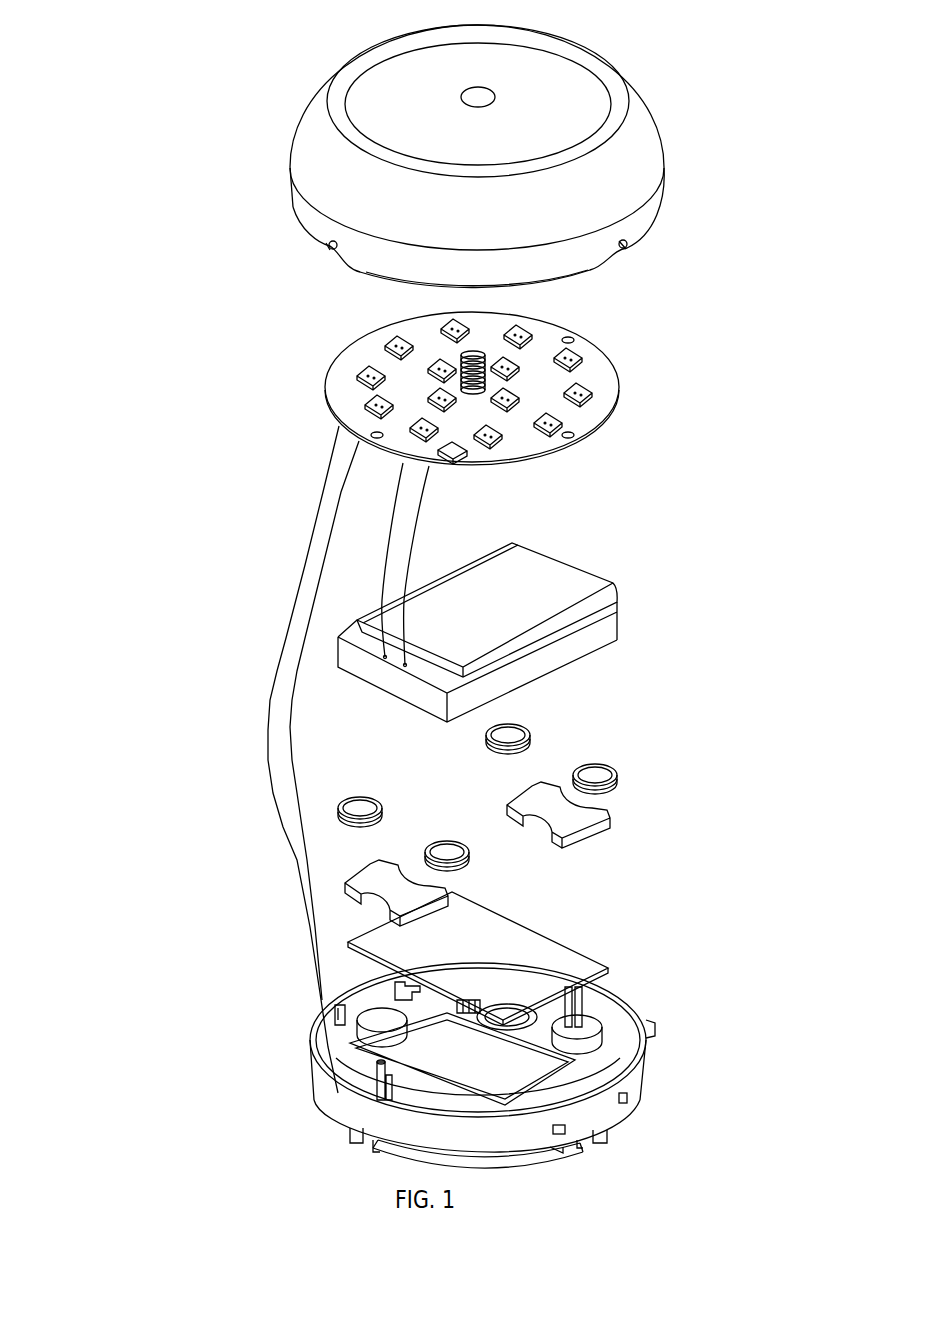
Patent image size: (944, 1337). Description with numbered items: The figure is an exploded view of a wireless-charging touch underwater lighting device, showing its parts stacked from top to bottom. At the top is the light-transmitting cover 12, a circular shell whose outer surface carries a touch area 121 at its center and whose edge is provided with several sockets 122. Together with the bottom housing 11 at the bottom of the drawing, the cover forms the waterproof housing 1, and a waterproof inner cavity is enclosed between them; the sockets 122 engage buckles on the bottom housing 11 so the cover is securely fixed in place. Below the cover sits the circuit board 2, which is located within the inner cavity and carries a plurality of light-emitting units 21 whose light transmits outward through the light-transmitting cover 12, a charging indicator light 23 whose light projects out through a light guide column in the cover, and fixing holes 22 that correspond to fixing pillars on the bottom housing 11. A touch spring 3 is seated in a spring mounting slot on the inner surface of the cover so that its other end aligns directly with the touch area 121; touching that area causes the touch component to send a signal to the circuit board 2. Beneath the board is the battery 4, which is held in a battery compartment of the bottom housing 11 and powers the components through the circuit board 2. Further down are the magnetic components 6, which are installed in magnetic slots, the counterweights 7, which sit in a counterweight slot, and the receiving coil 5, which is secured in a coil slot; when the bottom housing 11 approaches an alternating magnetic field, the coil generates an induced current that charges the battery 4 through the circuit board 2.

The waterproof housing 1 is at (102, 607).
The bottom housing 11 is at (374, 980).
The light-transmitting cover 12 is at (310, 222).
The touch area 121 is at (478, 93).
The sockets 122 is at (330, 247).
The circuit board 2 is at (488, 327).
The light-emitting units 21 is at (575, 390).
The fixing holes 22 is at (570, 436).
The charging indicator light 23 is at (455, 452).
The touch spring 3 is at (487, 358).
The battery 4 is at (493, 598).
The receiving coil 5 is at (493, 960).
The magnetic components 6 is at (362, 806).
The counterweights 7 is at (413, 893).